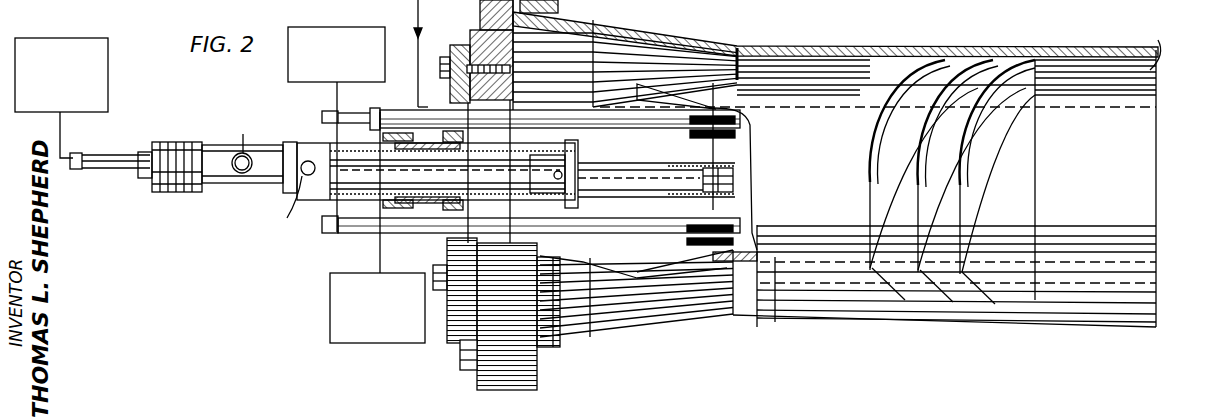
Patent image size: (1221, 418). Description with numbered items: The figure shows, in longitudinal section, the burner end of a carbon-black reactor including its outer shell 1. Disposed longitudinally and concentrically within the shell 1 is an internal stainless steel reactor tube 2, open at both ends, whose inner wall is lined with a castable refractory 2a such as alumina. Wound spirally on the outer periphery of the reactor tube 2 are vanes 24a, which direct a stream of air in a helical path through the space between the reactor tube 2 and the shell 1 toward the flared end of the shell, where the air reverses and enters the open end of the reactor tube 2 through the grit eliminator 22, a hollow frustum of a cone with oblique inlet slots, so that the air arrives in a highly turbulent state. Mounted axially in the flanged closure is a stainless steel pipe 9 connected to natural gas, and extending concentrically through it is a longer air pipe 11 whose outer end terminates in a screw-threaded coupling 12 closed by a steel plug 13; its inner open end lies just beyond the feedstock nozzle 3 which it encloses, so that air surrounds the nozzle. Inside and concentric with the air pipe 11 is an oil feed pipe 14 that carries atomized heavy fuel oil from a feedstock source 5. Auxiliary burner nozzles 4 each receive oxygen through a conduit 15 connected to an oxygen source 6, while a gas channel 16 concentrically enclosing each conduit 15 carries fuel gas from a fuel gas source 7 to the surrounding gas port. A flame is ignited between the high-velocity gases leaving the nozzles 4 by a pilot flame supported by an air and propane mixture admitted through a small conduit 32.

The outer shell 1 is at (792, 44).
The internal reactor tube 2 is at (860, 90).
The castable refractory 2a is at (753, 228).
The feedstock nozzle 3 is at (735, 178).
The auxiliary nozzles 4 is at (737, 123).
The feedstock source 5 is at (108, 90).
The oxygen source 6 is at (347, 27).
The fuel gas source 7 is at (383, 343).
The natural gas pipe 9 is at (284, 204).
The air pipe 11 is at (221, 184).
The screw-threaded steel coupling 12 is at (175, 193).
The steel plug 13 is at (147, 150).
The oil feed pipe 14 is at (108, 166).
The oxygen conduit 15 is at (330, 110).
The gas channel 16 is at (590, 93).
The grit eliminator 22 is at (665, 104).
The vanes 24a is at (940, 203).
The small conduit 32 is at (741, 49).